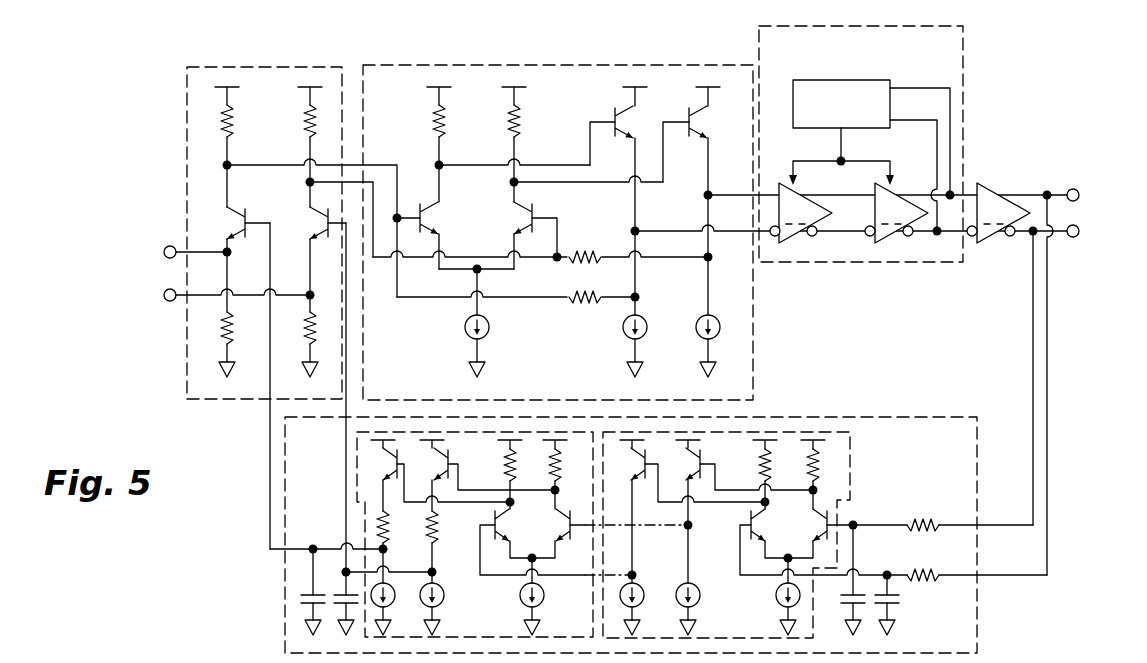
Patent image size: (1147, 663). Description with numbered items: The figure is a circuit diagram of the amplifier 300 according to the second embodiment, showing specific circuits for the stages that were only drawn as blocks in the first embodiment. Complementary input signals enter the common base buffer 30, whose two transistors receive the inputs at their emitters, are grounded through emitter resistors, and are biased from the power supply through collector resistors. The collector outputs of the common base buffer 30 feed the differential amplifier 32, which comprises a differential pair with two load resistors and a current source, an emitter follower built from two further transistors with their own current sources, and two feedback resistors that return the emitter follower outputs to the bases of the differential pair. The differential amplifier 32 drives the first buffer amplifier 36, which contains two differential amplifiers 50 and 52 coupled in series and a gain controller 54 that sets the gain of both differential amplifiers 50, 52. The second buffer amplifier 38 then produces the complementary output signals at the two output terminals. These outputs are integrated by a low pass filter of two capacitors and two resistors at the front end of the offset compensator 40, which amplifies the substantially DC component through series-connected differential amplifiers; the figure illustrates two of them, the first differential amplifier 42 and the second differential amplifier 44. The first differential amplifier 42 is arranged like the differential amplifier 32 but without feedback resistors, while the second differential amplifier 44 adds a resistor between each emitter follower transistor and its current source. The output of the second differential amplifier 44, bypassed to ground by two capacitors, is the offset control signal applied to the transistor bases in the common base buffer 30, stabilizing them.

The amplifier 300 is at (1022, 88).
The common base buffer 30 is at (264, 67).
The differential amplifier 32 is at (561, 65).
The first buffer amplifier 36 is at (963, 50).
The second buffer amplifier 38 is at (990, 183).
The offset compensator 40 is at (848, 417).
The first differential amplifier 42 is at (851, 478).
The second differential amplifier 44 is at (357, 500).
The differential amplifier 50 is at (792, 182).
The differential amplifier 52 is at (896, 182).
The gain controller 54 is at (841, 80).